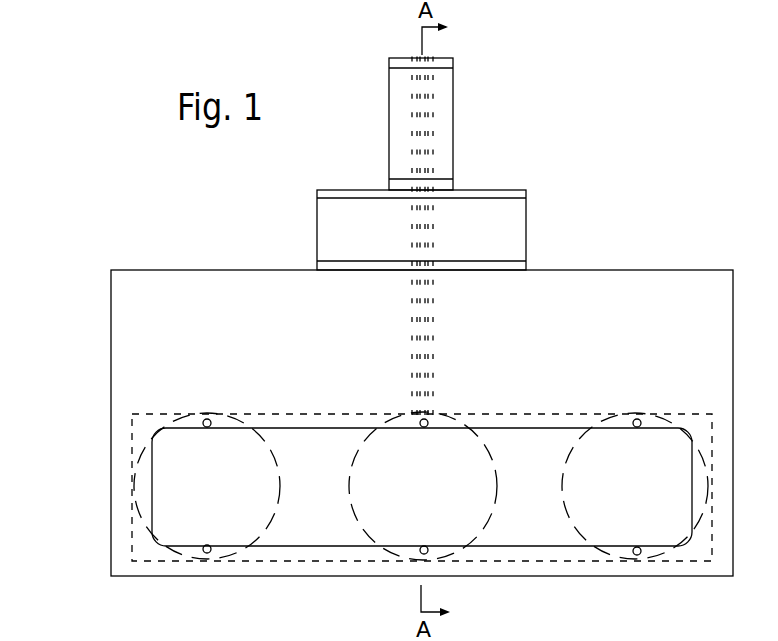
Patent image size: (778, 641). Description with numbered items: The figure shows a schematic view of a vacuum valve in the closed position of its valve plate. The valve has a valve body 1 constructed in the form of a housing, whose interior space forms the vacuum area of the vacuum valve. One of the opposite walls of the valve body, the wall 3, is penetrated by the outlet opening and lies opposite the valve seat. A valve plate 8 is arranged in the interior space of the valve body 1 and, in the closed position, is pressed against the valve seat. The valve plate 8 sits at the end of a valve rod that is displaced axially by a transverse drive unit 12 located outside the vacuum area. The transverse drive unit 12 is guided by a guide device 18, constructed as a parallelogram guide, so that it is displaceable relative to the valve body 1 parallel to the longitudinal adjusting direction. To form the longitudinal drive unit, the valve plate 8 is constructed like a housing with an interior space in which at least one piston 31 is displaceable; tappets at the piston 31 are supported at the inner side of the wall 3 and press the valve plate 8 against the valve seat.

The valve body 1 is at (100, 322).
The wall 3 is at (128, 398).
The valve plate 8 is at (142, 436).
The transverse drive unit 12 is at (465, 123).
The guide device 18 is at (536, 226).
The piston 31 is at (258, 515).